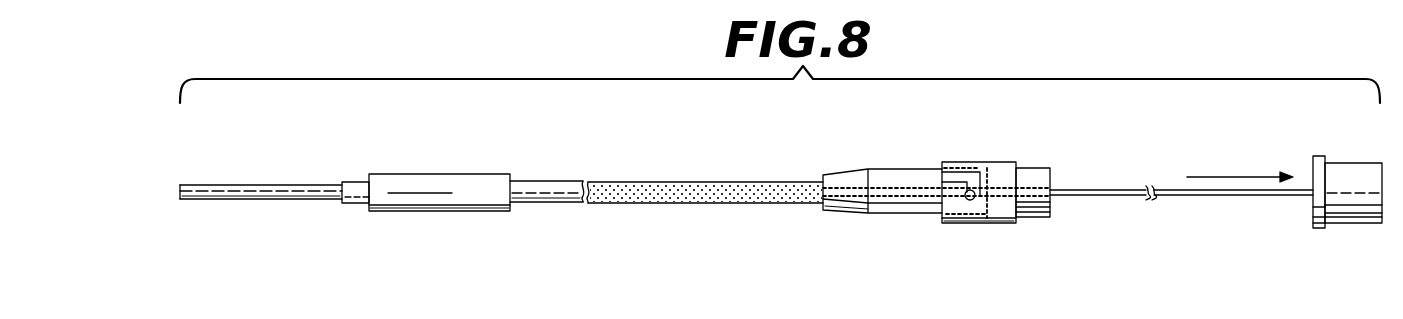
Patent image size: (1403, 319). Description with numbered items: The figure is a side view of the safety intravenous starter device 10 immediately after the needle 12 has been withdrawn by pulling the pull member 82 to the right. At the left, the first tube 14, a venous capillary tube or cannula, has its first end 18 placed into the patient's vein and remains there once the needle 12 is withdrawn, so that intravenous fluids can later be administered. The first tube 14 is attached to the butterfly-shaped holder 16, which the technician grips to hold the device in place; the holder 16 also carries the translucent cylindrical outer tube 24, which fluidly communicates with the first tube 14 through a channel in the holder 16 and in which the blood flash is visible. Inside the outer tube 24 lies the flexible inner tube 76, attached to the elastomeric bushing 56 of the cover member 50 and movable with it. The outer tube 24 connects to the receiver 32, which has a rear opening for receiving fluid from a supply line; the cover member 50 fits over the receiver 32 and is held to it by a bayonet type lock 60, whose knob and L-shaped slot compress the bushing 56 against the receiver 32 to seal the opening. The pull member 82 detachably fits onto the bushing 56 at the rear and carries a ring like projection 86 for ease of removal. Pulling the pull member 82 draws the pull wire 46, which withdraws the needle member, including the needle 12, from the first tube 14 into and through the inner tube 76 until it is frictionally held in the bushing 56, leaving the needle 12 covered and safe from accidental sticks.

The safety intravenous starter device 10 is at (782, 216).
The needle 12 is at (609, 192).
The first tube 14 is at (287, 185).
The holder 16 is at (432, 185).
The first end 18 is at (185, 201).
The outer tube 24 is at (592, 205).
The receiver 32 is at (920, 213).
The pull wire 46 is at (1103, 196).
The cover member 50 is at (1003, 216).
The elastomeric bushing 56 is at (1040, 177).
The bayonet type lock 60 is at (965, 160).
The inner tube 76 is at (600, 182).
The pull member 82 is at (1355, 170).
The ring like projection 86 is at (1320, 229).